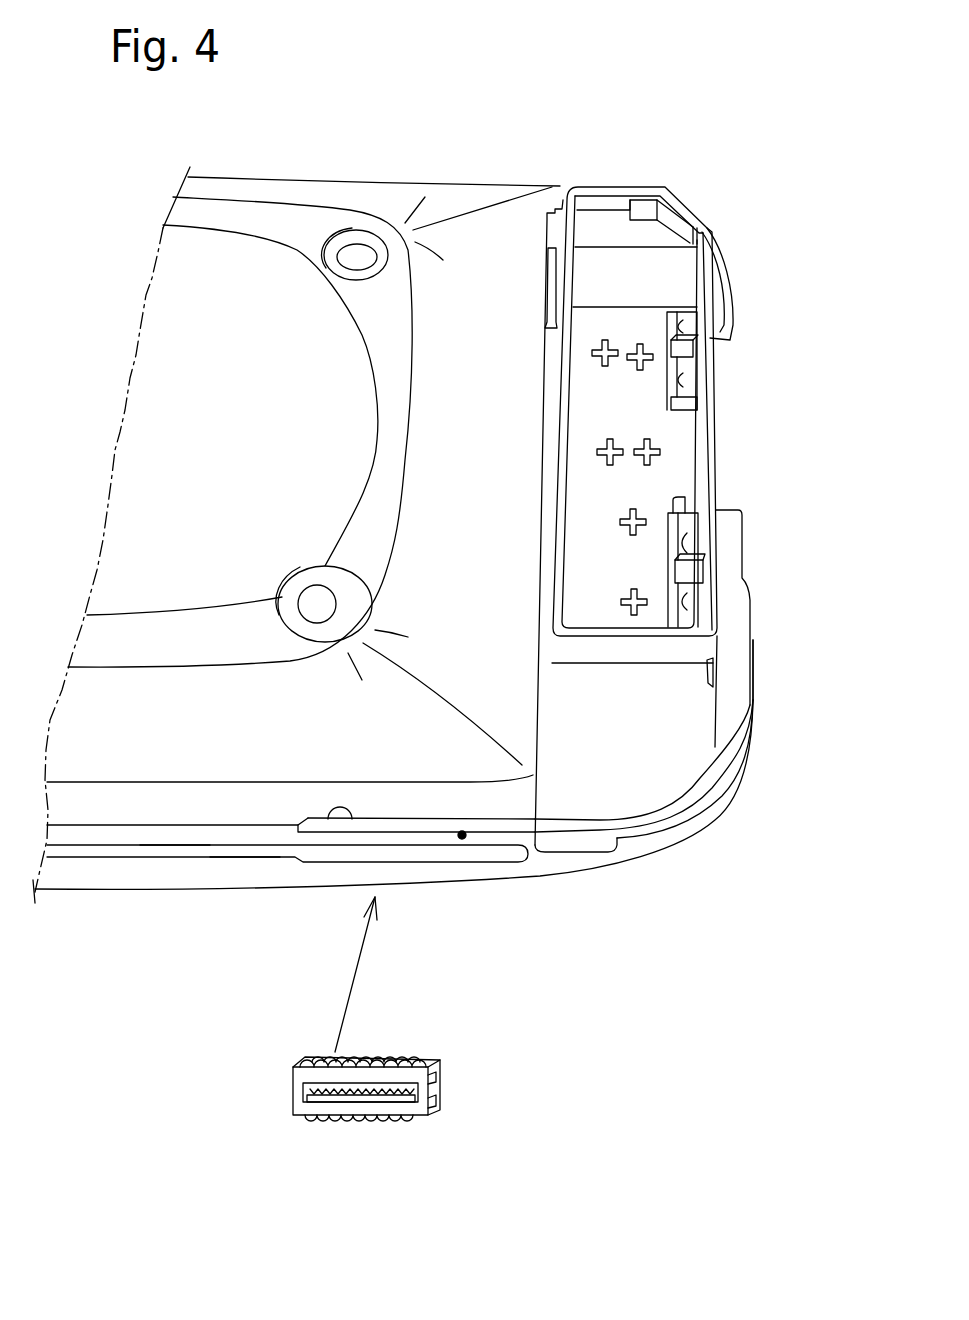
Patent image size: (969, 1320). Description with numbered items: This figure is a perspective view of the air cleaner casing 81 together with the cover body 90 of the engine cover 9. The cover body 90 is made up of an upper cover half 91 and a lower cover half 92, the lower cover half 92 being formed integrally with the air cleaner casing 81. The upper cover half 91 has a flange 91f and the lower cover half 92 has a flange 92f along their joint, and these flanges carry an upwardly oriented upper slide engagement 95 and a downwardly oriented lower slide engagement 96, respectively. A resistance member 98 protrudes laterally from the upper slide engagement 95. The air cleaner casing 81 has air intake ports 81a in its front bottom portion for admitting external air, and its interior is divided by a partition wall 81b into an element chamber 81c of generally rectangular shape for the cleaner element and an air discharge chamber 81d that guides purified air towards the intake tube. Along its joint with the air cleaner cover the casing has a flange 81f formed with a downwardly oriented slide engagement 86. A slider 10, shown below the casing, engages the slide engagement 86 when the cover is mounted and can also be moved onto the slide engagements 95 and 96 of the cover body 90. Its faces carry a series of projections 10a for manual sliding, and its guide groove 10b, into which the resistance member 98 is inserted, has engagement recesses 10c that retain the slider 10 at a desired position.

The engine cover 9 is at (277, 898).
The slider 10 is at (381, 1049).
The projections 10a is at (387, 1063).
The guide groove 10b is at (383, 1102).
The engagement recesses 10c is at (340, 1093).
The air cleaner casing 81 is at (686, 556).
The air intake ports 81a is at (680, 325).
The partition wall 81b is at (673, 283).
The element chamber 81c is at (667, 468).
The air discharge chamber 81d is at (650, 227).
The flange 81f is at (585, 853).
The slide engagement 86 is at (613, 850).
The cover body 90 is at (272, 924).
The upper cover half 91 is at (112, 818).
The flange 91f is at (180, 840).
The lower cover half 92 is at (127, 963).
The flange 92f is at (240, 852).
The upper slide engagement 95 is at (330, 828).
The lower slide engagement 96 is at (415, 862).
The resistance member 98 is at (462, 840).